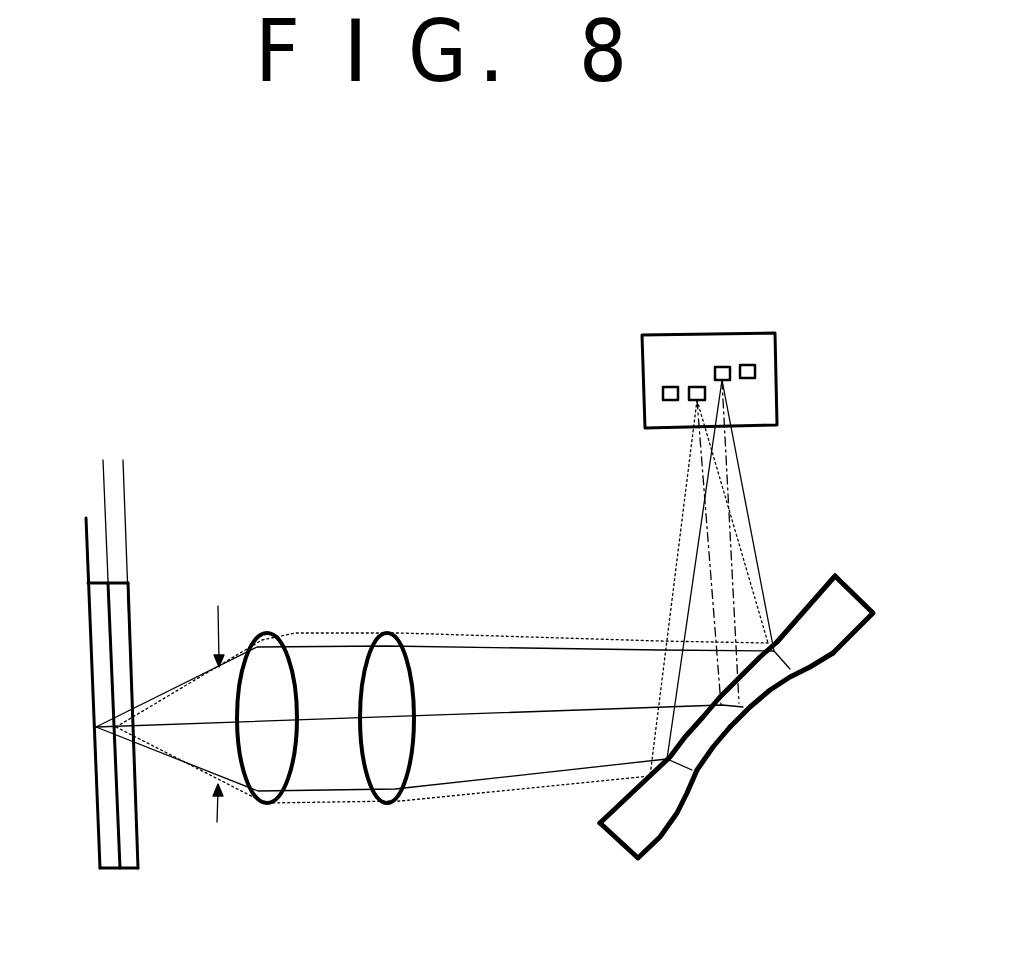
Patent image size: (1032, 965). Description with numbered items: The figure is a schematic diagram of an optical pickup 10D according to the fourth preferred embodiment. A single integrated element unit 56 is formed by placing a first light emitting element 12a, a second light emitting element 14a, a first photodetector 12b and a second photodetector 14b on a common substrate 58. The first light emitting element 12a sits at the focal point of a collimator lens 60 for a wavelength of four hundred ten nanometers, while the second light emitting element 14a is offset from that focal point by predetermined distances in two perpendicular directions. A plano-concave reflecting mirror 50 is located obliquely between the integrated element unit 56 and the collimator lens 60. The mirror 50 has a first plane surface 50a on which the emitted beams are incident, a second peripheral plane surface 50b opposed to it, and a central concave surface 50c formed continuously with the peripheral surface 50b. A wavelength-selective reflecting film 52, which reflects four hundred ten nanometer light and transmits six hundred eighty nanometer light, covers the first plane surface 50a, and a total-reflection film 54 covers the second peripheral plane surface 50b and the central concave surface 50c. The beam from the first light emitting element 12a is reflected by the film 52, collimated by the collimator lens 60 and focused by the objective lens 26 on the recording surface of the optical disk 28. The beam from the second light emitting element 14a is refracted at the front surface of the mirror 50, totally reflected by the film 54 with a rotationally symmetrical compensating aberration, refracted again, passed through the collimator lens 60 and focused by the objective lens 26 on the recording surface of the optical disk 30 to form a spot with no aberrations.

The optical pickup 10D is at (357, 413).
The optical disk 28 is at (128, 805).
The optical disk 30 is at (95, 648).
The objective lens 26 is at (277, 805).
The collimator lens 60 is at (390, 800).
The plano-concave reflecting mirror 50 is at (660, 842).
The first plane surface 50a is at (808, 598).
The second peripheral plane surface 50b is at (848, 642).
The central concave surface 50c is at (769, 691).
The wavelength-selective reflecting film 52 is at (720, 697).
The total-reflection film 54 is at (692, 770).
The integrated element unit 56 is at (643, 410).
The substrate 58 is at (778, 386).
The first light emitting element 12a is at (697, 387).
The first photodetector 12b is at (663, 393).
The second light emitting element 14a is at (722, 367).
The second photodetector 14b is at (748, 365).